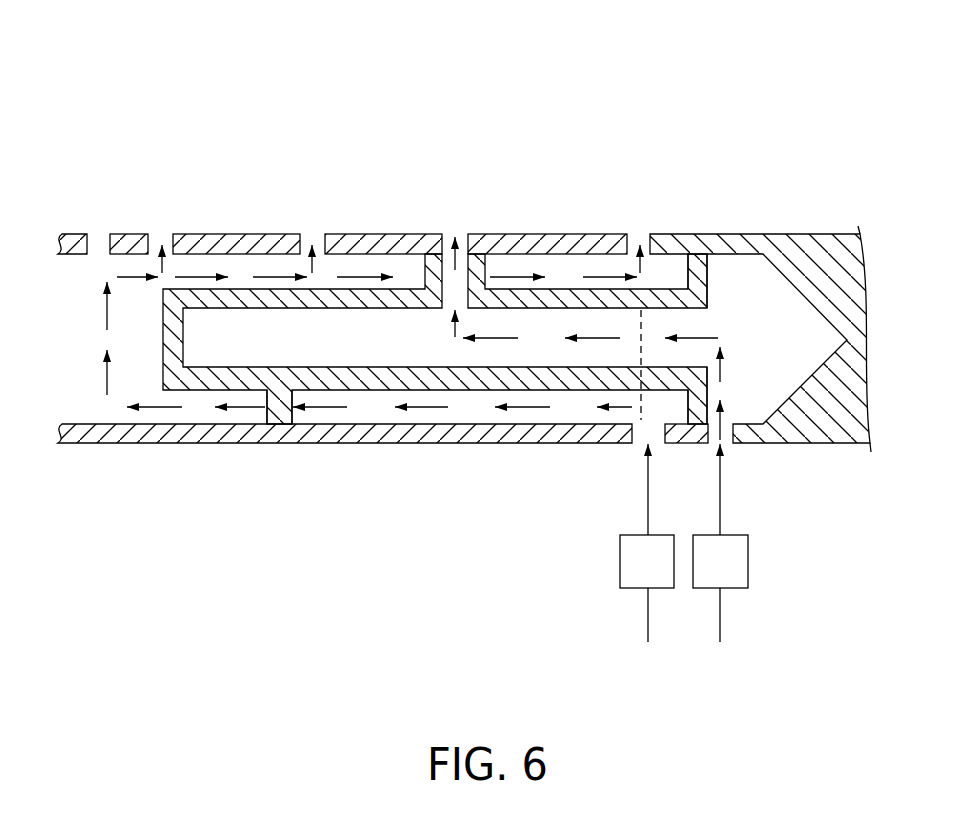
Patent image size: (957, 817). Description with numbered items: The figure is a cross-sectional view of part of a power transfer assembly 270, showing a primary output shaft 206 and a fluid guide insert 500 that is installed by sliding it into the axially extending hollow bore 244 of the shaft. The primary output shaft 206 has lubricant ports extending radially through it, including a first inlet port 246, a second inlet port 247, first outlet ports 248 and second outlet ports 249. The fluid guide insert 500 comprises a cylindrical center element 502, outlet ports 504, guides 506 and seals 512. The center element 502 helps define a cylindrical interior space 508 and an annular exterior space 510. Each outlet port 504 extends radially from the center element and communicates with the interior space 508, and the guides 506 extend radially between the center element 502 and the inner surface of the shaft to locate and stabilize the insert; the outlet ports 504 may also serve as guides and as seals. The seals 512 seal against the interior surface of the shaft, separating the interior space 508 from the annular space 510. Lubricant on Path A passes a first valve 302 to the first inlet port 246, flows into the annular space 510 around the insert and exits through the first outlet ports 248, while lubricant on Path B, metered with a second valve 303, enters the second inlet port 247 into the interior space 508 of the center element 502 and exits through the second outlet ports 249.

The power transfer assembly 270 is at (198, 90).
The primary output shaft 206 is at (783, 234).
The hollow bore 244 is at (88, 410).
The first inlet port 246 is at (641, 443).
The second inlet port 247 is at (727, 443).
The first outlet ports 248 is at (98, 240).
The second outlet ports 249 is at (458, 232).
The first valve 302 is at (620, 562).
The second valve 303 is at (748, 562).
The fluid guide insert 500 is at (484, 392).
The center element 502 is at (163, 355).
The outlet ports 504 is at (486, 275).
The guides 506 is at (292, 420).
The interior space 508 is at (415, 355).
The annular space 510 is at (378, 270).
The seals 512 is at (712, 265).